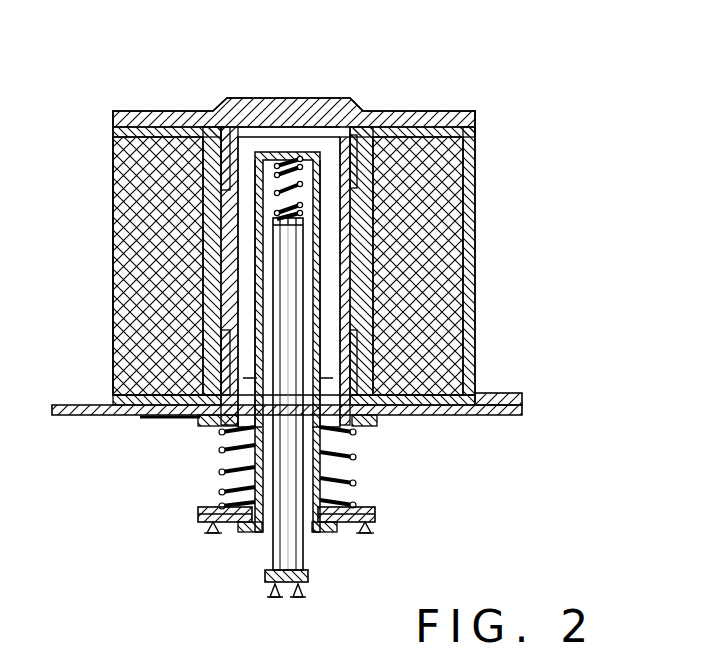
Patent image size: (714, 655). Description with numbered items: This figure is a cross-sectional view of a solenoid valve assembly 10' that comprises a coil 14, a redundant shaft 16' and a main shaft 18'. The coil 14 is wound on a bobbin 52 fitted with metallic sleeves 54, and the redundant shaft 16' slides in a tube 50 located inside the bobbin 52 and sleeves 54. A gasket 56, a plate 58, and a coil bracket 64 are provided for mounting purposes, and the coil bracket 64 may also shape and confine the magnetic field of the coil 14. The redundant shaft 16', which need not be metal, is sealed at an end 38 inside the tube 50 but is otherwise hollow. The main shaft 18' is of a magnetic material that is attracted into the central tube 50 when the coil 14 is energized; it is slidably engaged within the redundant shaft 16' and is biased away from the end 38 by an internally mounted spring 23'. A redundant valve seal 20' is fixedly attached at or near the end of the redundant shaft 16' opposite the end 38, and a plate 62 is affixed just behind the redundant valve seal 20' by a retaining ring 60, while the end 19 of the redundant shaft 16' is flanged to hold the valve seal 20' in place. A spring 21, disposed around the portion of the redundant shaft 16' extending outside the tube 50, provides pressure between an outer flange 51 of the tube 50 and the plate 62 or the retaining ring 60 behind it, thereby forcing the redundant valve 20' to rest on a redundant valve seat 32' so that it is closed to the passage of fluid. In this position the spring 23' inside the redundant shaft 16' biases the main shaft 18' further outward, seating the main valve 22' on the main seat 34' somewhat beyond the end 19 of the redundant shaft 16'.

The solenoid valve assembly 10' is at (353, 210).
The coil 14 is at (440, 257).
The redundant shaft 16' is at (253, 228).
The main shaft 18' is at (412, 226).
The end of redundant shaft 19 is at (332, 532).
The redundant valve seal 20' is at (187, 541).
The spring 21 is at (345, 457).
The main valve 22' is at (258, 428).
The spring 23' is at (328, 285).
The redundant valve seat 32' is at (192, 558).
The main seat 34' is at (304, 604).
The end 38 is at (288, 160).
The tube 50 is at (253, 112).
The outer flange 51 is at (376, 426).
The bobbin 52 is at (128, 127).
The metallic sleeves 54 is at (257, 178).
The gasket 56 is at (150, 388).
The plate 58 is at (90, 405).
The retaining ring 60 is at (352, 503).
The plate 62 is at (225, 508).
The coil bracket 64 is at (475, 113).